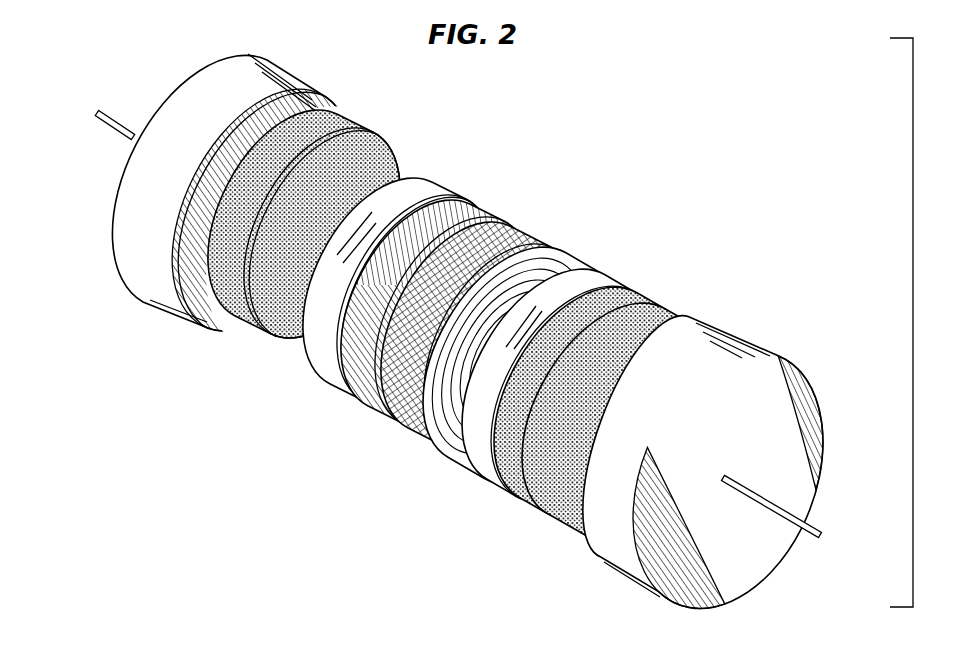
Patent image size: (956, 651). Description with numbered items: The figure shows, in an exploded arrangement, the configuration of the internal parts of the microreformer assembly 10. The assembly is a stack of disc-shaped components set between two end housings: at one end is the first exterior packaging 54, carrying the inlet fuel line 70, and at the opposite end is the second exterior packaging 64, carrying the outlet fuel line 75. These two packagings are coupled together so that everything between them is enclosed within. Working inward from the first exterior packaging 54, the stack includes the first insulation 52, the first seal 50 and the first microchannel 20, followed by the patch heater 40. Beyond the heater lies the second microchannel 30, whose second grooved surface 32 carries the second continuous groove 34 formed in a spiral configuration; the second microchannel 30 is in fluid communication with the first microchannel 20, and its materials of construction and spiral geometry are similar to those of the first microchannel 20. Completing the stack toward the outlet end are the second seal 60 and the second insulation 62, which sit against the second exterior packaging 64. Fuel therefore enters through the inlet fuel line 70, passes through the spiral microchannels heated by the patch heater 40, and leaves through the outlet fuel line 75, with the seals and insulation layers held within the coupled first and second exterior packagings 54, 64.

The microreformer assembly 10 is at (681, 233).
The first microchannel 20 is at (358, 400).
The second microchannel 30 is at (440, 455).
The second grooved surface 32 is at (573, 256).
The second continuous groove 34 is at (470, 483).
The patch heater 40 is at (403, 428).
The first seal 50 is at (318, 383).
The first insulation 52 is at (244, 342).
The first exterior packaging 54 is at (151, 312).
The second seal 60 is at (490, 473).
The second insulation 62 is at (536, 520).
The second exterior packaging 64 is at (618, 580).
The inlet fuel line 70 is at (115, 128).
The outlet fuel line 75 is at (779, 504).